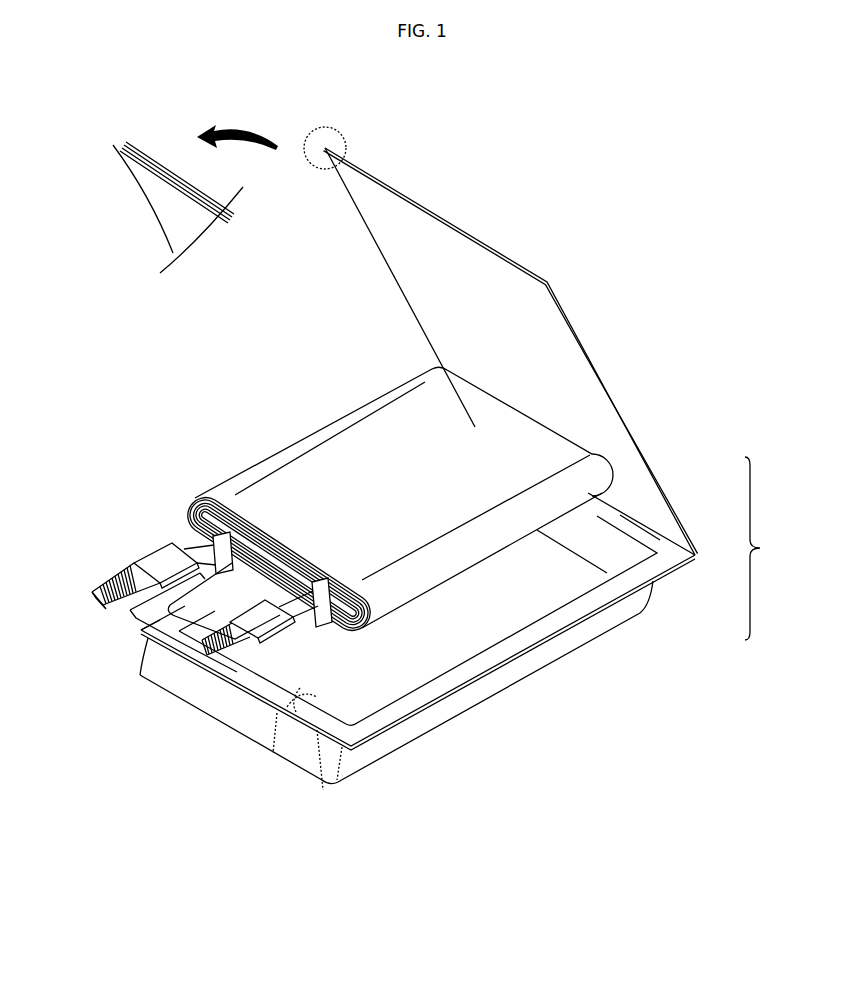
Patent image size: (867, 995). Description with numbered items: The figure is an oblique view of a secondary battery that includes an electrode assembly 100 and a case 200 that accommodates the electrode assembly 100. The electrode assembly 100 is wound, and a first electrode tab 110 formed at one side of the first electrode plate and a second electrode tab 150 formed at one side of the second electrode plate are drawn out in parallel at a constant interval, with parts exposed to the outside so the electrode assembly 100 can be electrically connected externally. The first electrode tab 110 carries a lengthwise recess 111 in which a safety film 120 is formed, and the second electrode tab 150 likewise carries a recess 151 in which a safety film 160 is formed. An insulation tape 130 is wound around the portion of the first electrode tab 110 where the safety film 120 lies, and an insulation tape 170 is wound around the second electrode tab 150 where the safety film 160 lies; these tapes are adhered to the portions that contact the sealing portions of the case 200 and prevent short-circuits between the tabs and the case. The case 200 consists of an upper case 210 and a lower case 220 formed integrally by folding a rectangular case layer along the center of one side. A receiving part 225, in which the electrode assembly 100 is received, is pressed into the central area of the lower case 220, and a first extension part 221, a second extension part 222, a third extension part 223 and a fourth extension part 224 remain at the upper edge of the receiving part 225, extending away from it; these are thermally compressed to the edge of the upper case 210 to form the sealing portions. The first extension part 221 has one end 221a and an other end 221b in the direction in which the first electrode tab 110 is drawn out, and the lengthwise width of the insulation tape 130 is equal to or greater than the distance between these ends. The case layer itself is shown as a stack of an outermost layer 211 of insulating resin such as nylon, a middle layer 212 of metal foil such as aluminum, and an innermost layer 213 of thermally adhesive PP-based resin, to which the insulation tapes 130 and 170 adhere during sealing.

The electrode assembly 100 is at (352, 428).
The first electrode tab 110 is at (133, 569).
The recess 111 is at (102, 596).
The safety film 120 is at (115, 583).
The insulation tape 130 is at (157, 558).
The second electrode tab 150 is at (207, 660).
The recess 151 is at (200, 648).
The safety film 160 is at (185, 634).
The insulation tape 170 is at (240, 665).
The case 200 is at (774, 548).
The upper case 210 is at (674, 500).
The outermost layer 211 is at (125, 142).
The middle layer 212 is at (122, 144).
The innermost layer 213 is at (119, 148).
The lower case 220 is at (397, 614).
The first extension part 221 is at (268, 688).
The one end of first extension part 221a is at (323, 774).
The other end of first extension part 221b is at (282, 712).
The second extension part 222 is at (440, 687).
The third extension part 223 is at (133, 597).
The fourth extension part 224 is at (630, 523).
The receiving part 225 is at (513, 672).